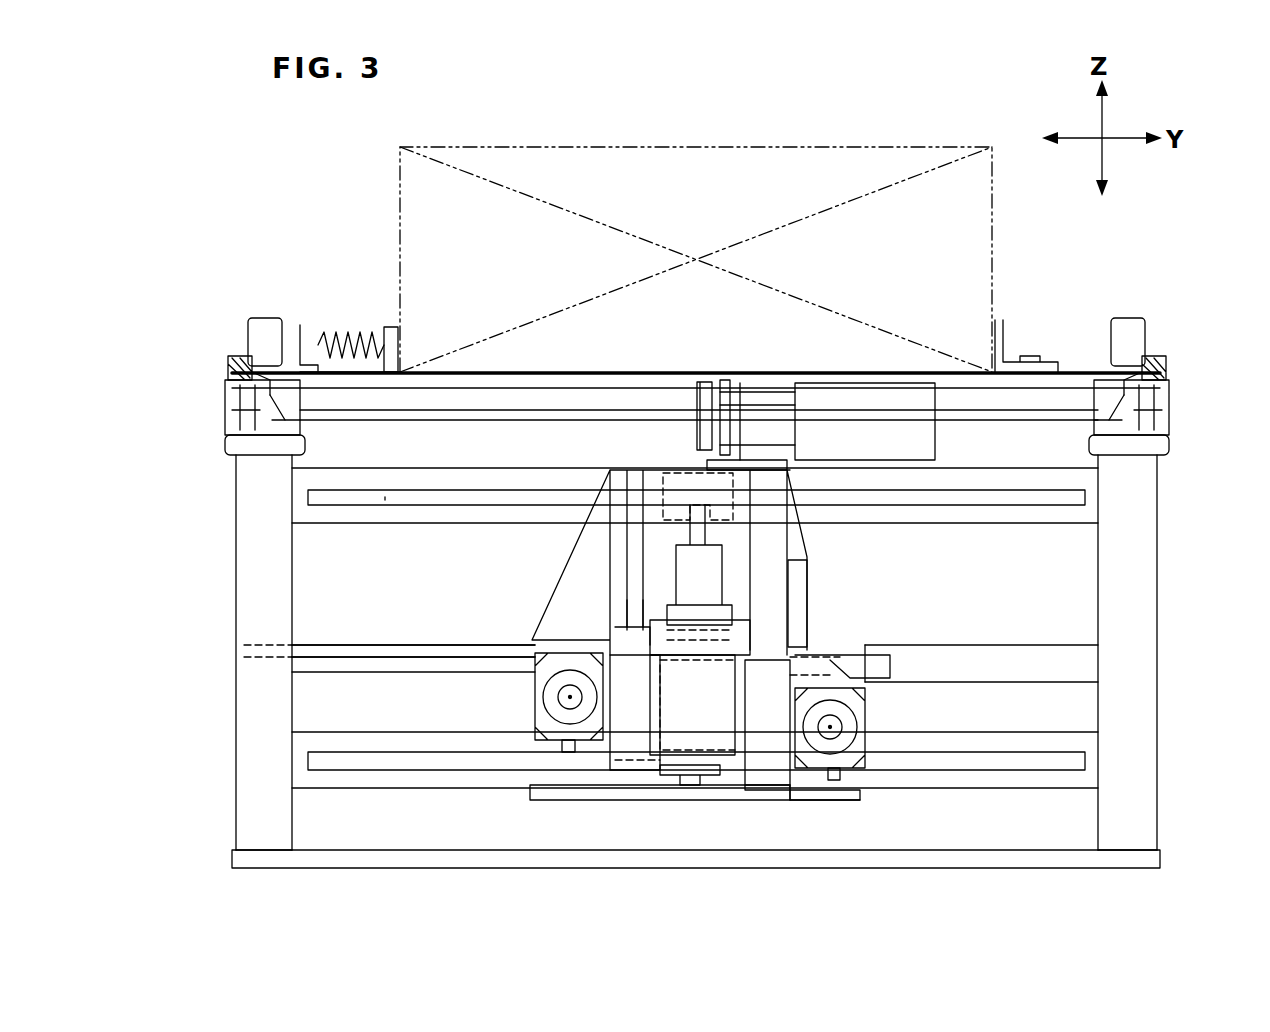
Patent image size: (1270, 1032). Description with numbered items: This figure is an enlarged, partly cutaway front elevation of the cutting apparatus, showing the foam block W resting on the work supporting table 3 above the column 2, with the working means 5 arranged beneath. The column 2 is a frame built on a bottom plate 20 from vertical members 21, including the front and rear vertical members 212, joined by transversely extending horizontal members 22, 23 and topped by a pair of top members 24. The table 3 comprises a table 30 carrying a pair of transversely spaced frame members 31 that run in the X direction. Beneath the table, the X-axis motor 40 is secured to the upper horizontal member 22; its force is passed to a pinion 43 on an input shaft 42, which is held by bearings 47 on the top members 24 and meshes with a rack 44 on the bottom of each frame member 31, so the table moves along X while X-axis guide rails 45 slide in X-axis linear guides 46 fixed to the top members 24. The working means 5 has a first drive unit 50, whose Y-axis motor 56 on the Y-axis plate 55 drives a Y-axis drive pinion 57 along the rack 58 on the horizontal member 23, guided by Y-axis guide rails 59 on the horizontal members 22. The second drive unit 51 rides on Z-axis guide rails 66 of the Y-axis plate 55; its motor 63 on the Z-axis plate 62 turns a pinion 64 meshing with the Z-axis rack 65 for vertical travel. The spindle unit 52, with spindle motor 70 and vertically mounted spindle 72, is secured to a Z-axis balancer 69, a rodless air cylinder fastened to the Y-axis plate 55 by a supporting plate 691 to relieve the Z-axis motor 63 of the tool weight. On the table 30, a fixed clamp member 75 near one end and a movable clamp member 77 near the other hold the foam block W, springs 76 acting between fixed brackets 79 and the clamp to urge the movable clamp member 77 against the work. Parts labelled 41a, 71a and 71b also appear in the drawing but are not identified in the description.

The foam block W is at (850, 147).
The column 2 is at (1165, 588).
The work supporting table 3 is at (362, 312).
The working means 5 is at (895, 592).
The bottom plate 20 is at (530, 868).
The vertical members 21 is at (245, 575).
The horizontal members 22 is at (1025, 520).
The horizontal member 23 is at (1020, 672).
The top members 24 is at (228, 447).
The table 30 is at (1075, 372).
The frame members 31 is at (262, 318).
The X-axis motor 40 is at (935, 440).
The coupling 41a is at (706, 380).
The input shaft 42 is at (500, 395).
The pinion 43 is at (240, 390).
The rack 44 is at (243, 356).
The X-axis guide rails 45 is at (250, 410).
The X-axis linear guides 46 is at (248, 374).
The bearings 47 is at (288, 417).
The first drive unit 50 is at (520, 625).
The second drive unit 51 is at (862, 798).
The spindle unit 52 is at (665, 578).
The Y-axis plate 55 is at (580, 770).
The Y-axis motor 56 is at (540, 690).
The Y-axis drive pinion 57 is at (535, 742).
The rack 58 is at (370, 665).
The Y-axis guide rails 59 is at (385, 497).
The Z-axis plate 62 is at (842, 665).
The motor 63 is at (865, 706).
The pinion 64 is at (870, 724).
The Z-axis rack 65 is at (800, 580).
The Z-axis guide rails 66 is at (630, 605).
The Z-axis balancer 69 is at (775, 760).
The supporting plate 691 is at (770, 785).
The spindle motor 70 is at (745, 790).
The lower coupling 71a is at (690, 795).
The lower plate 71b is at (660, 790).
The spindle 72 is at (690, 540).
The fixed clamp member 75 is at (1000, 330).
The springs 76 is at (340, 332).
The movable clamp member 77 is at (393, 327).
The fixed brackets 79 is at (304, 325).
The front and rear vertical members 212 is at (245, 718).